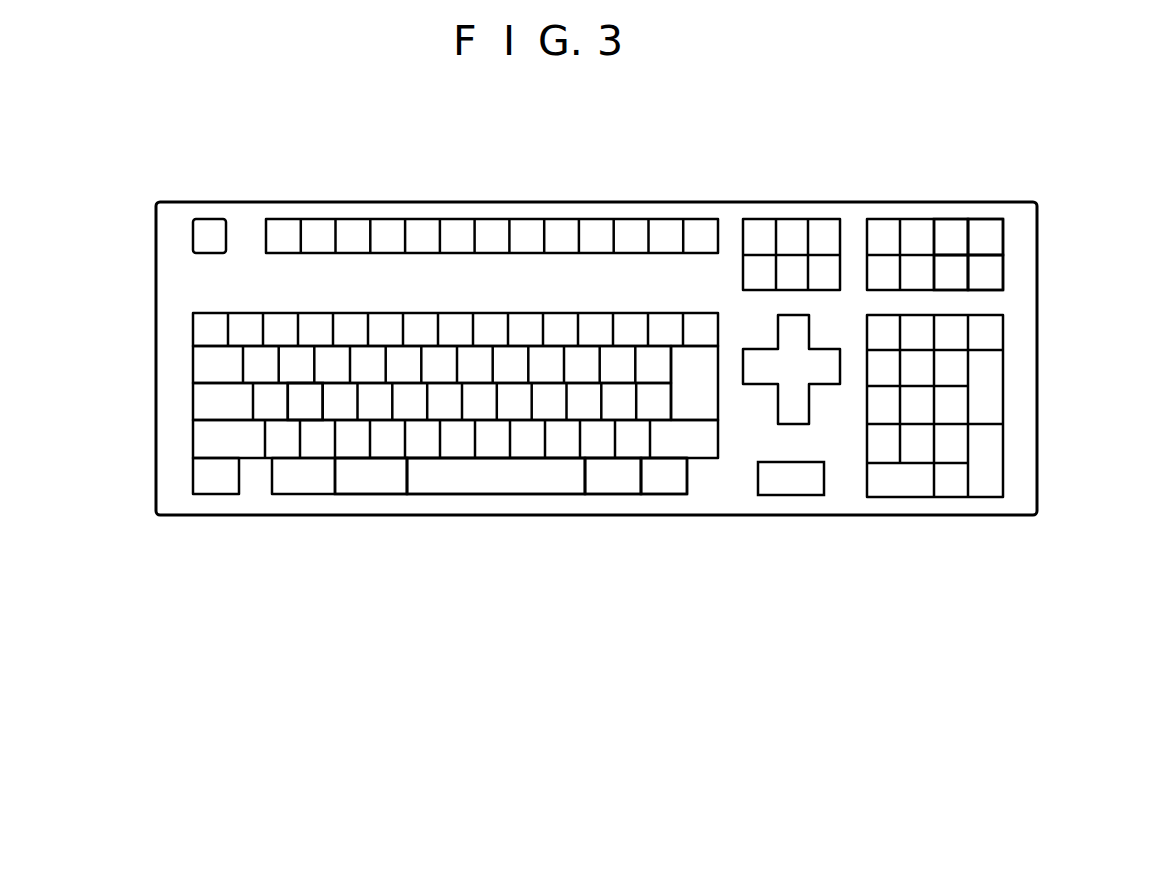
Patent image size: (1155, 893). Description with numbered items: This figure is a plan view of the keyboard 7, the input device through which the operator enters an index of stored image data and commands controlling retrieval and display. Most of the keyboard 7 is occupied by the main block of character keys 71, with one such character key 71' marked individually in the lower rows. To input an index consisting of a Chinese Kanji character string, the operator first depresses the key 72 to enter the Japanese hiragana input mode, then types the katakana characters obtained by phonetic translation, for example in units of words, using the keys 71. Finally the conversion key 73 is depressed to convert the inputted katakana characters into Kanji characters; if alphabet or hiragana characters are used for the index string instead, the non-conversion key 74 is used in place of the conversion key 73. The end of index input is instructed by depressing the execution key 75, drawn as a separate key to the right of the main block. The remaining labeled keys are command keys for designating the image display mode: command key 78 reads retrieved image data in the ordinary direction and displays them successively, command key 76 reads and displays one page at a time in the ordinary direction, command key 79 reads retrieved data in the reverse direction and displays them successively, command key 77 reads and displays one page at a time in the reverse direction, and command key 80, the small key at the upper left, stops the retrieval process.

The keyboard 7 is at (1038, 305).
The keys 71 is at (496, 519).
The character key 71' is at (281, 493).
The key 72 is at (669, 477).
The conversion key 73 is at (613, 482).
The non-conversion key 74 is at (380, 482).
The execution key 75 is at (800, 485).
The command key 76 is at (983, 277).
The command key 77 is at (948, 273).
The command key 78 is at (987, 243).
The command key 79 is at (948, 235).
The command key 80 is at (212, 227).